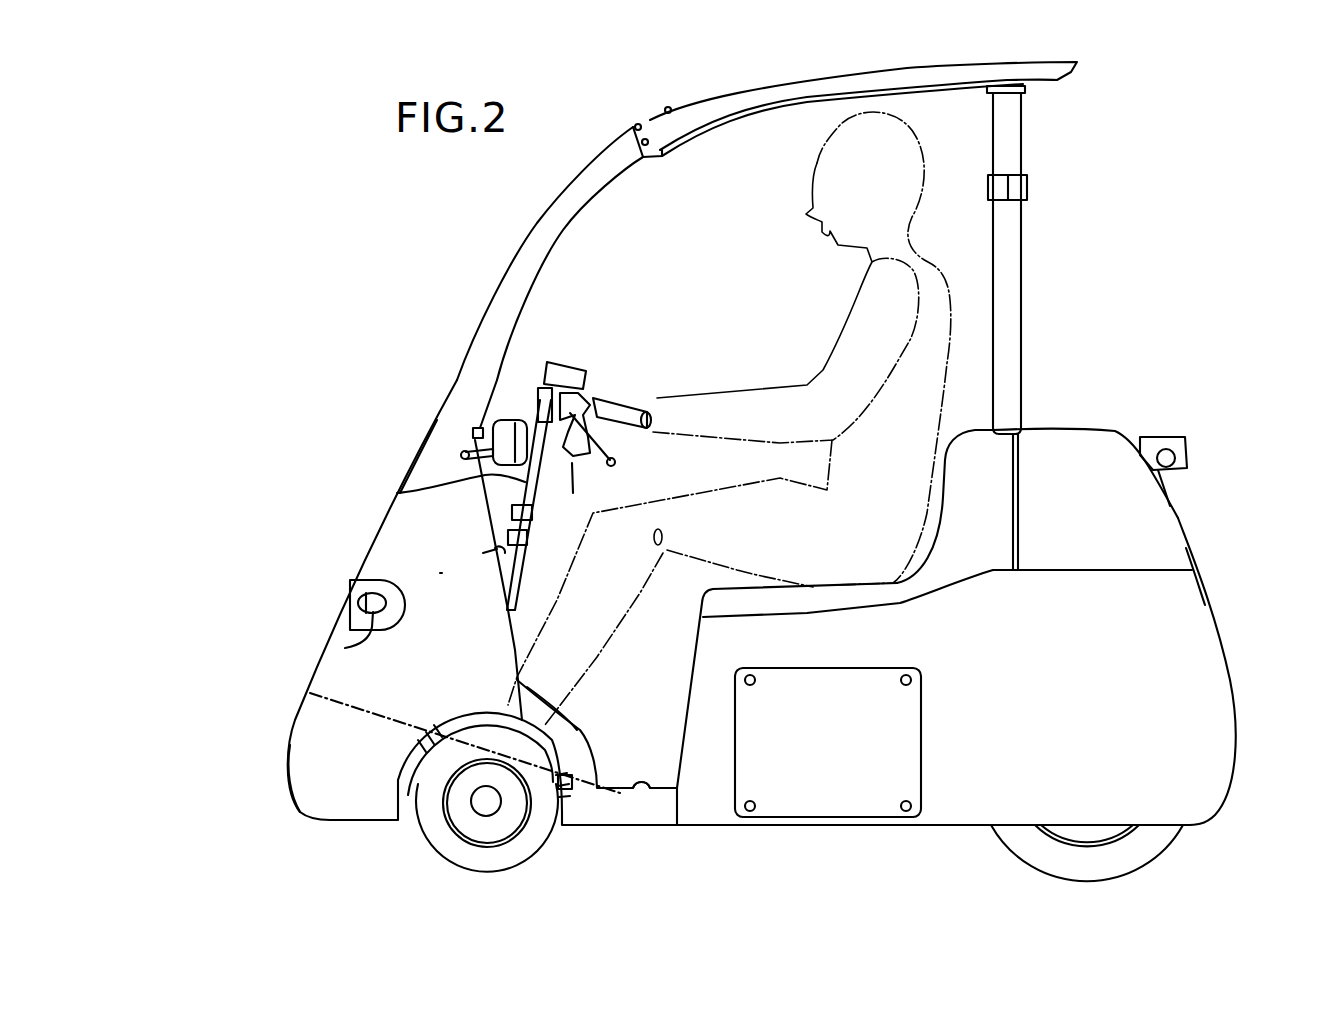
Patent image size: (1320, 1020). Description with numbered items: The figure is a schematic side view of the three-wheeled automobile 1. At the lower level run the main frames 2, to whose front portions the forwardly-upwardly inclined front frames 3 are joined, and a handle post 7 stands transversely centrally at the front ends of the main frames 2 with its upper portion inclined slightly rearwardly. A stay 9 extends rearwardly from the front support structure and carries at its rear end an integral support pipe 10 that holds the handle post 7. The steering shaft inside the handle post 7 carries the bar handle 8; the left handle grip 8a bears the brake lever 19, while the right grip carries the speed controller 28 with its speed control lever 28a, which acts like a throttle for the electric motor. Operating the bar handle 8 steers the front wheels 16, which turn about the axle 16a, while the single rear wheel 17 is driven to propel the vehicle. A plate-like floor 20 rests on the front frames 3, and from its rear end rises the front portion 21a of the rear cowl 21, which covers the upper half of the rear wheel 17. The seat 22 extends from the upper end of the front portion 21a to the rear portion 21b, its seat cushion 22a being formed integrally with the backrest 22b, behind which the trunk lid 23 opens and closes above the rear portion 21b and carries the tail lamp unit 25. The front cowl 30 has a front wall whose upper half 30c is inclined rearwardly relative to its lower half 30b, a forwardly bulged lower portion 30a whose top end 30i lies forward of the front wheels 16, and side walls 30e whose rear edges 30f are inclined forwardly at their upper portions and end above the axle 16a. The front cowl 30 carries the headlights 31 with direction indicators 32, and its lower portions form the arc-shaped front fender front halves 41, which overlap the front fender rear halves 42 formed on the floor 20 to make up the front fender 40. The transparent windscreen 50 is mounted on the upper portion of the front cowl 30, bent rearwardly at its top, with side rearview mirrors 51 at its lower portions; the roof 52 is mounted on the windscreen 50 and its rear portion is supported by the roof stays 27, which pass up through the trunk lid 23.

The three-wheeled automobile 1 is at (1116, 142).
The main frames 2 is at (567, 825).
The front frames 3 is at (425, 805).
The handle post 7 is at (462, 455).
The bar handle 8 is at (605, 393).
The handle grip 8a is at (610, 397).
The stay 9 is at (505, 512).
The support pipe 10 is at (527, 540).
The front wheel 16 is at (543, 837).
The axle 16a is at (490, 812).
The rear wheel 17 is at (1150, 843).
The brake lever 19 is at (617, 466).
The floor 20 is at (650, 793).
The rear cowl 21 is at (1199, 662).
The front portion of rear cowl 21a is at (700, 678).
The rear portion of rear cowl 21b is at (1202, 584).
The seat 22 is at (836, 585).
The seat cushion 22a is at (860, 583).
The backrest 22b is at (935, 488).
The trunk lid 23 is at (1062, 428).
The tail lamp unit 25 is at (1178, 437).
The roof stay 27 is at (1013, 250).
The speed controller 28 is at (563, 360).
The speed control lever 28a is at (565, 493).
The front cowl 30 is at (287, 748).
The lower portion 30a is at (307, 818).
The lower half 30b is at (293, 708).
The upper half 30c is at (405, 497).
The side wall 30e is at (444, 573).
The rear edge 30f is at (495, 548).
The top end 30i is at (287, 790).
The headlight 31 is at (350, 590).
The direction indicator 32 is at (345, 648).
The front fender 40 is at (466, 712).
The front fender front half 41 is at (402, 755).
The front fender rear half 42 is at (550, 727).
The windscreen 50 is at (530, 250).
The side rearview mirror 51 is at (503, 437).
The roof 52 is at (857, 68).